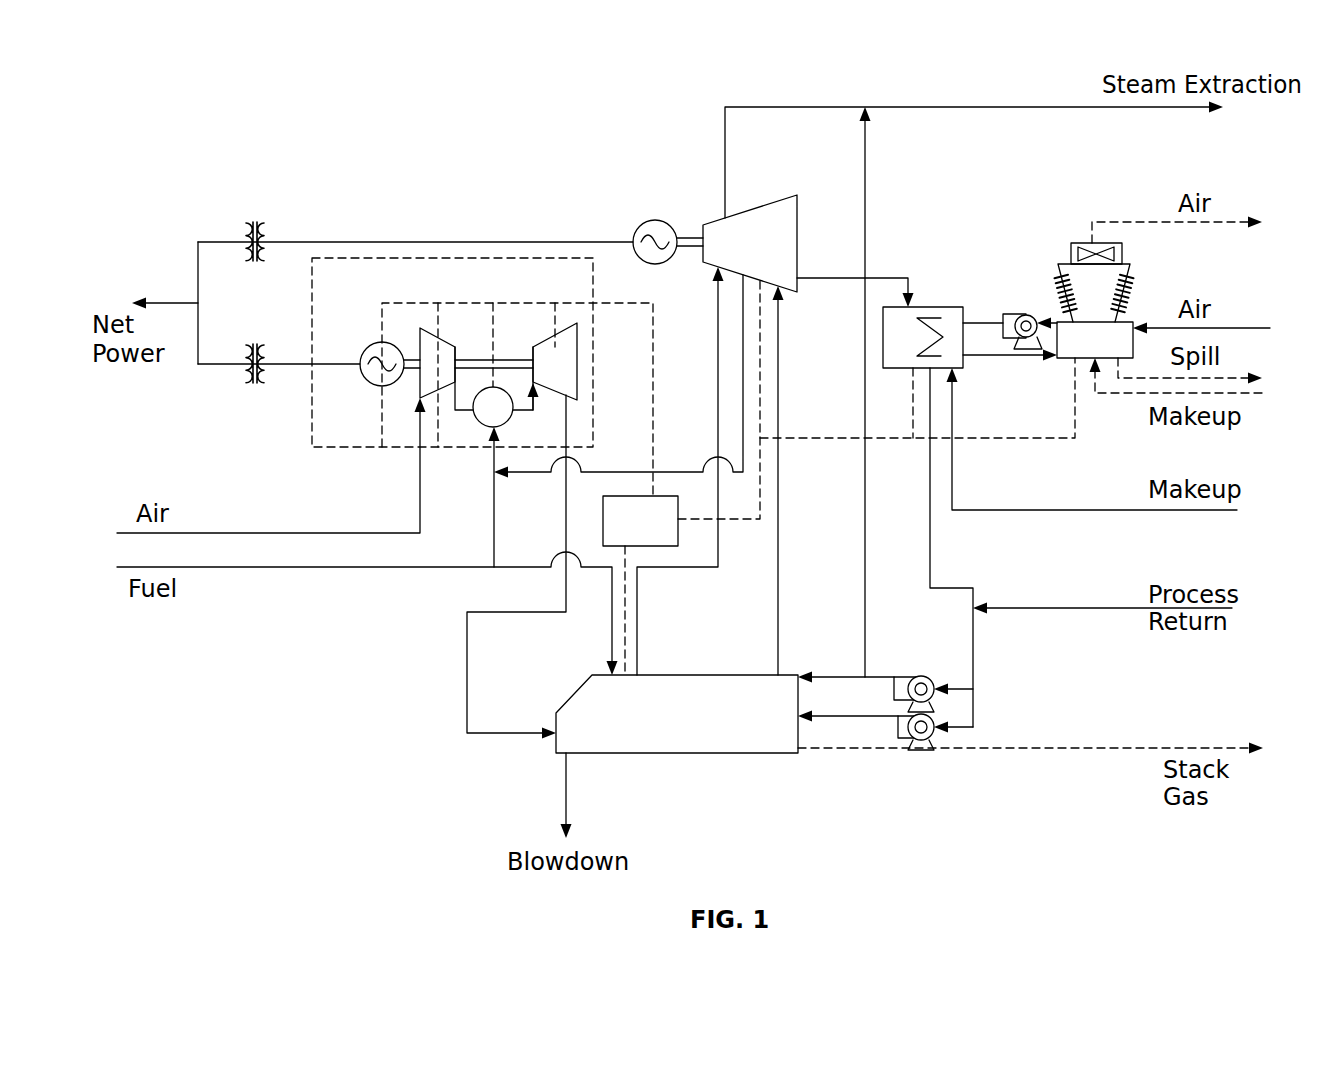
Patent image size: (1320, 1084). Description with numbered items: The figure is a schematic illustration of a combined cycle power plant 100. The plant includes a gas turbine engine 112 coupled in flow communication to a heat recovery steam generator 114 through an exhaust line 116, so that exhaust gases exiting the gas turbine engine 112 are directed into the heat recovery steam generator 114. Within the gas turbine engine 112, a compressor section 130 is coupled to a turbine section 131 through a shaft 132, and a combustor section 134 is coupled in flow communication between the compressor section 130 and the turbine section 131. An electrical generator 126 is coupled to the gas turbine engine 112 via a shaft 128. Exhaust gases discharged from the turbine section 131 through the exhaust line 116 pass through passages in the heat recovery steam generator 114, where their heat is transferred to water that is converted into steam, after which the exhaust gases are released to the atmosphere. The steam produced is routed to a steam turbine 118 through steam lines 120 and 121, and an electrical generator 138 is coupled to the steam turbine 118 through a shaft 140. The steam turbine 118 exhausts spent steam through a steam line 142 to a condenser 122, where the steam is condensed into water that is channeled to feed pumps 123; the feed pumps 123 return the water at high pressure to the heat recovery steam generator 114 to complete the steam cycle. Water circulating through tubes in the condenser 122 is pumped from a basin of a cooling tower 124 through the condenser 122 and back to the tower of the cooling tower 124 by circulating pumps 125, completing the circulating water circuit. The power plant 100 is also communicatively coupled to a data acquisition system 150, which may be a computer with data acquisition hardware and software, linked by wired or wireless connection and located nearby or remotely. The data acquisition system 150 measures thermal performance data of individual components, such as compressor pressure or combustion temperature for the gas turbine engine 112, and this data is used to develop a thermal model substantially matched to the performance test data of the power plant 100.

The combined cycle power plant 100 is at (478, 120).
The gas turbine engine 112 is at (522, 262).
The heat recovery steam generator 114 is at (712, 753).
The exhaust line 116 is at (468, 653).
The steam turbine 118 is at (757, 207).
The steam line 120 is at (780, 477).
The steam line 121 is at (670, 570).
The condenser 122 is at (898, 370).
The feed pumps 123 is at (910, 772).
The cooling tower 124 is at (1157, 278).
The circulating pumps 125 is at (1023, 313).
The electrical generator 126 is at (382, 388).
The shaft 128 is at (410, 350).
The compressor section 130 is at (433, 390).
The turbine section 131 is at (578, 352).
The shaft 132 is at (485, 357).
The combustor section 134 is at (488, 420).
The electrical generator 138 is at (657, 215).
The shaft 140 is at (690, 250).
The steam line 142 is at (876, 278).
The data acquisition system 150 is at (621, 535).